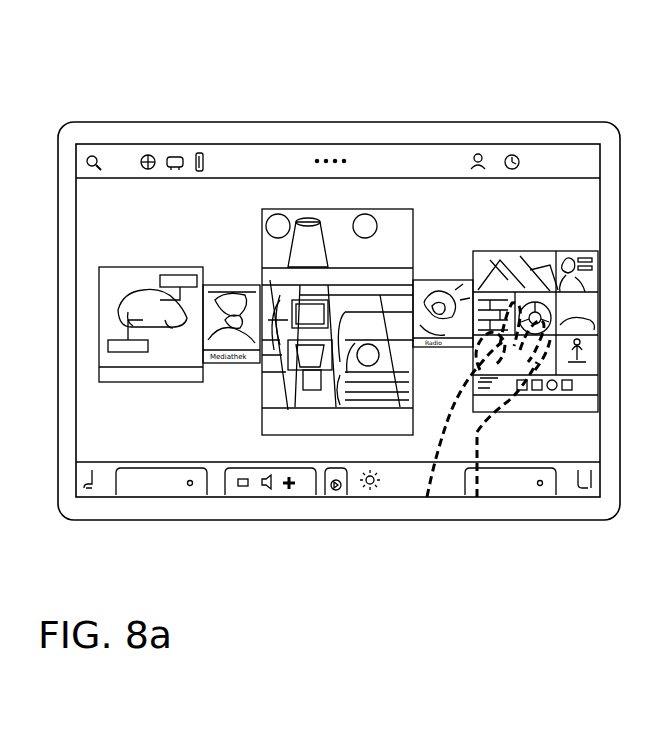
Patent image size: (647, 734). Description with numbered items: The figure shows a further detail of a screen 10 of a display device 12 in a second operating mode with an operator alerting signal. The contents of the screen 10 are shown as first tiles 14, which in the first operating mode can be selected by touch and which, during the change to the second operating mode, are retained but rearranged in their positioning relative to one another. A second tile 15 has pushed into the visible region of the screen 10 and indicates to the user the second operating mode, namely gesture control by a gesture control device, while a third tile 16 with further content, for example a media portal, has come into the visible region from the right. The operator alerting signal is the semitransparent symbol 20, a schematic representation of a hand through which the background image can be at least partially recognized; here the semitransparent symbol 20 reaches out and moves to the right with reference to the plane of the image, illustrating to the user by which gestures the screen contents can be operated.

The screen 10 is at (212, 198).
The display device 12 is at (306, 119).
The first tiles 14 is at (171, 357).
The second tile 15 is at (367, 262).
The third tile 16 is at (567, 425).
The semitransparent symbol 20 is at (455, 447).